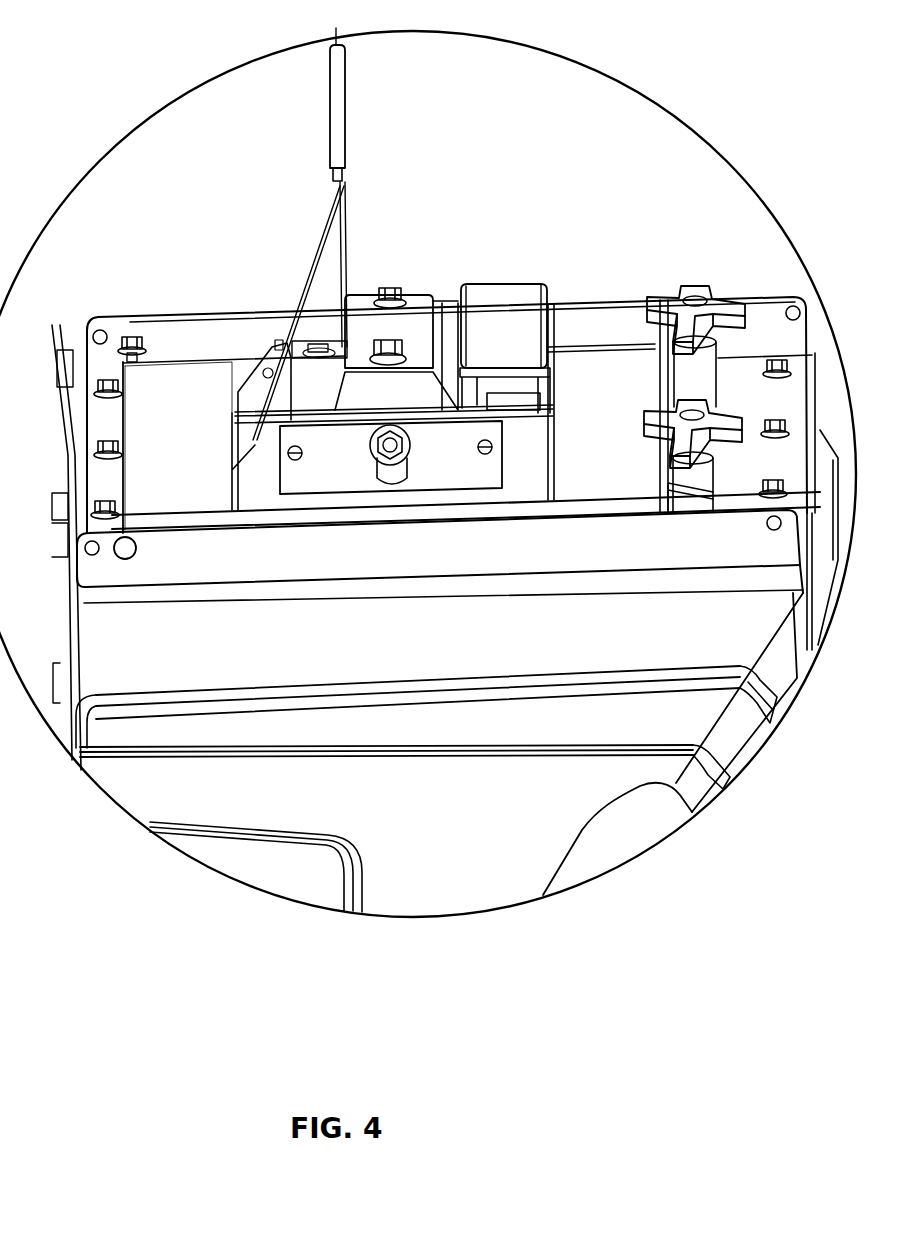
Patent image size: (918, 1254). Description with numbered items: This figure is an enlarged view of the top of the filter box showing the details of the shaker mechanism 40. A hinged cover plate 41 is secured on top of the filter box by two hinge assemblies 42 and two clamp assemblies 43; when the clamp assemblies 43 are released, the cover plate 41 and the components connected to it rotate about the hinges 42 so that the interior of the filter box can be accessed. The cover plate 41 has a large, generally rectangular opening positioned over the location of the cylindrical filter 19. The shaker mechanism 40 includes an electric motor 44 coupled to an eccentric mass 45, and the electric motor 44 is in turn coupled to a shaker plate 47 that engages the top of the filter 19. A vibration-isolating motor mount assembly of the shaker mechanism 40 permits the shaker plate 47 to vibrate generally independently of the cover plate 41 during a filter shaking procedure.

The shaker mechanism 40 is at (455, 221).
The hinged cover plate 41 is at (163, 420).
The hinge assemblies 42 is at (133, 337).
The clamp assemblies 43 is at (690, 290).
The electric motor 44 is at (449, 350).
The eccentric mass 45 is at (512, 380).
The cylindrical filter 19 is at (581, 487).
The shaker plate 47 is at (242, 447).